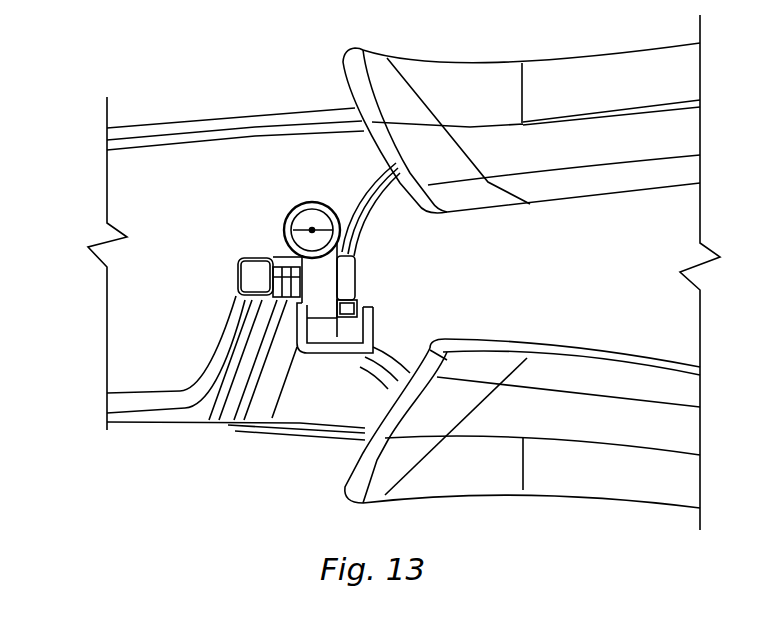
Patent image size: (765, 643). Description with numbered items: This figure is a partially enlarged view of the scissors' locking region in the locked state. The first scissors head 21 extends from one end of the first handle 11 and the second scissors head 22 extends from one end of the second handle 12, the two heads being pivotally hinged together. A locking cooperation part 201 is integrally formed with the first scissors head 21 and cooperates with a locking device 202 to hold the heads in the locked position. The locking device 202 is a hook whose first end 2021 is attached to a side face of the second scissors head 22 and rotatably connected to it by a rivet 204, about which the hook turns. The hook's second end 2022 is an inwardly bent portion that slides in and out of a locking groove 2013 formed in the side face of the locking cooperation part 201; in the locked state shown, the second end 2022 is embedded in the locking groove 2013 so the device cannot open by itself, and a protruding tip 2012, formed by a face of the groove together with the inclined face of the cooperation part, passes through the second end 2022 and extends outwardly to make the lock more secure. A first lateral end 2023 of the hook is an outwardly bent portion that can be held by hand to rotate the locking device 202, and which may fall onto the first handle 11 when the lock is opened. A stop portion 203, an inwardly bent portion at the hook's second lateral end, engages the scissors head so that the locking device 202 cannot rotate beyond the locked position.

The first handle 11 is at (578, 470).
The second handle 12 is at (650, 82).
The first scissors head 21 is at (200, 405).
The second scissors head 22 is at (175, 285).
The locking cooperation part 201 is at (330, 352).
The locking device 202 is at (323, 284).
The stop portion 203 is at (349, 271).
The rivet 204 is at (312, 230).
The protruding tip 2012 is at (357, 312).
The locking groove 2013 is at (353, 332).
The first end 2021 is at (351, 113).
The second end 2022 is at (317, 327).
The first lateral end 2023 is at (253, 257).